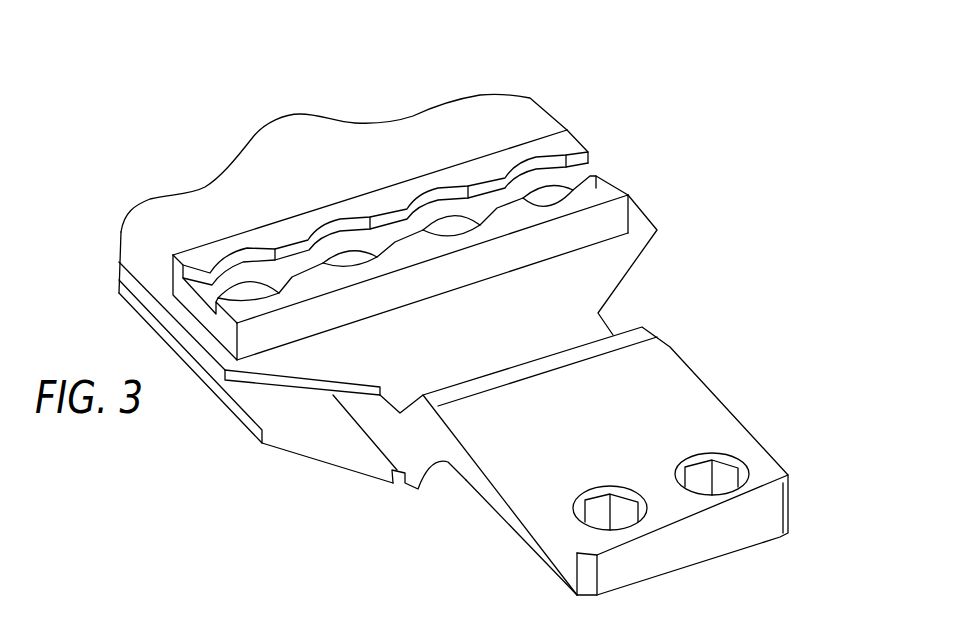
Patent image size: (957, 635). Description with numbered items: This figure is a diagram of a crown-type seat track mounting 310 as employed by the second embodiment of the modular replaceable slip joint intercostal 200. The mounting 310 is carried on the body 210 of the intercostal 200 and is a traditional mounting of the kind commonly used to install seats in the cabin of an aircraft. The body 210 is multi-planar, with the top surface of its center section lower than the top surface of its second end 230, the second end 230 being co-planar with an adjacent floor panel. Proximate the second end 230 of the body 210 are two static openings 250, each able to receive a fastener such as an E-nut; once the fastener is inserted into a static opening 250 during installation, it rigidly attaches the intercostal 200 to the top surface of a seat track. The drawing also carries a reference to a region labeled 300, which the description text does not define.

The modular replaceable slip joint intercostal 200 is at (715, 293).
The body 210 is at (420, 130).
The second end 230 is at (655, 378).
The static openings 250 is at (726, 463).
The base plate 300 is at (313, 505).
The crown-type seat track mounting 310 is at (597, 188).